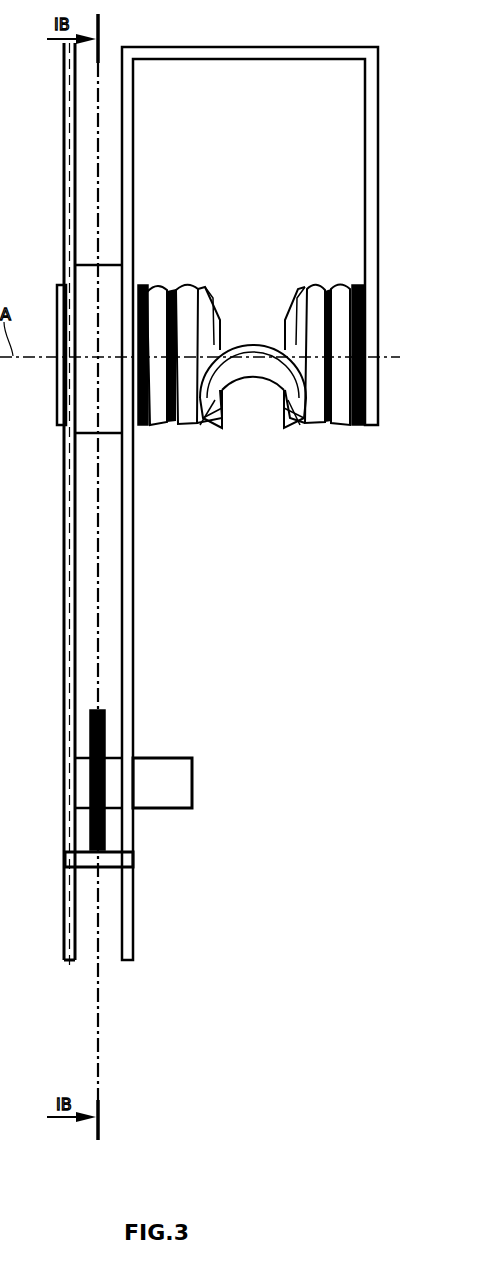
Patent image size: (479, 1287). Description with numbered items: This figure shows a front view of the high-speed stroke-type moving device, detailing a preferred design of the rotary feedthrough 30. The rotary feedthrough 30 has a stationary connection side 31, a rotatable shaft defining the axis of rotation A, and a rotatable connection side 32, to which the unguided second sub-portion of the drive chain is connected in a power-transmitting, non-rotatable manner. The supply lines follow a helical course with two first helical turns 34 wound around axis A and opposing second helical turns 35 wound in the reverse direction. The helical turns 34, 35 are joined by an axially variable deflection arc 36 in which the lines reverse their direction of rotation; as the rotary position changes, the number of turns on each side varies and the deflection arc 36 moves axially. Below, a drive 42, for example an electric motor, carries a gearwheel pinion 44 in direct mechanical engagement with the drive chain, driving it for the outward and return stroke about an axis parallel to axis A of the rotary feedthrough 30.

The rotary feedthrough 30 is at (350, 437).
The stationary connection side 31 is at (155, 280).
The rotatable connection side 32 is at (344, 271).
The first helical turns 34 is at (200, 287).
The second helical turns 35 is at (345, 333).
The deflection arc 36 is at (253, 366).
The drive 42 is at (170, 770).
The gearwheel pinion 44 is at (106, 822).